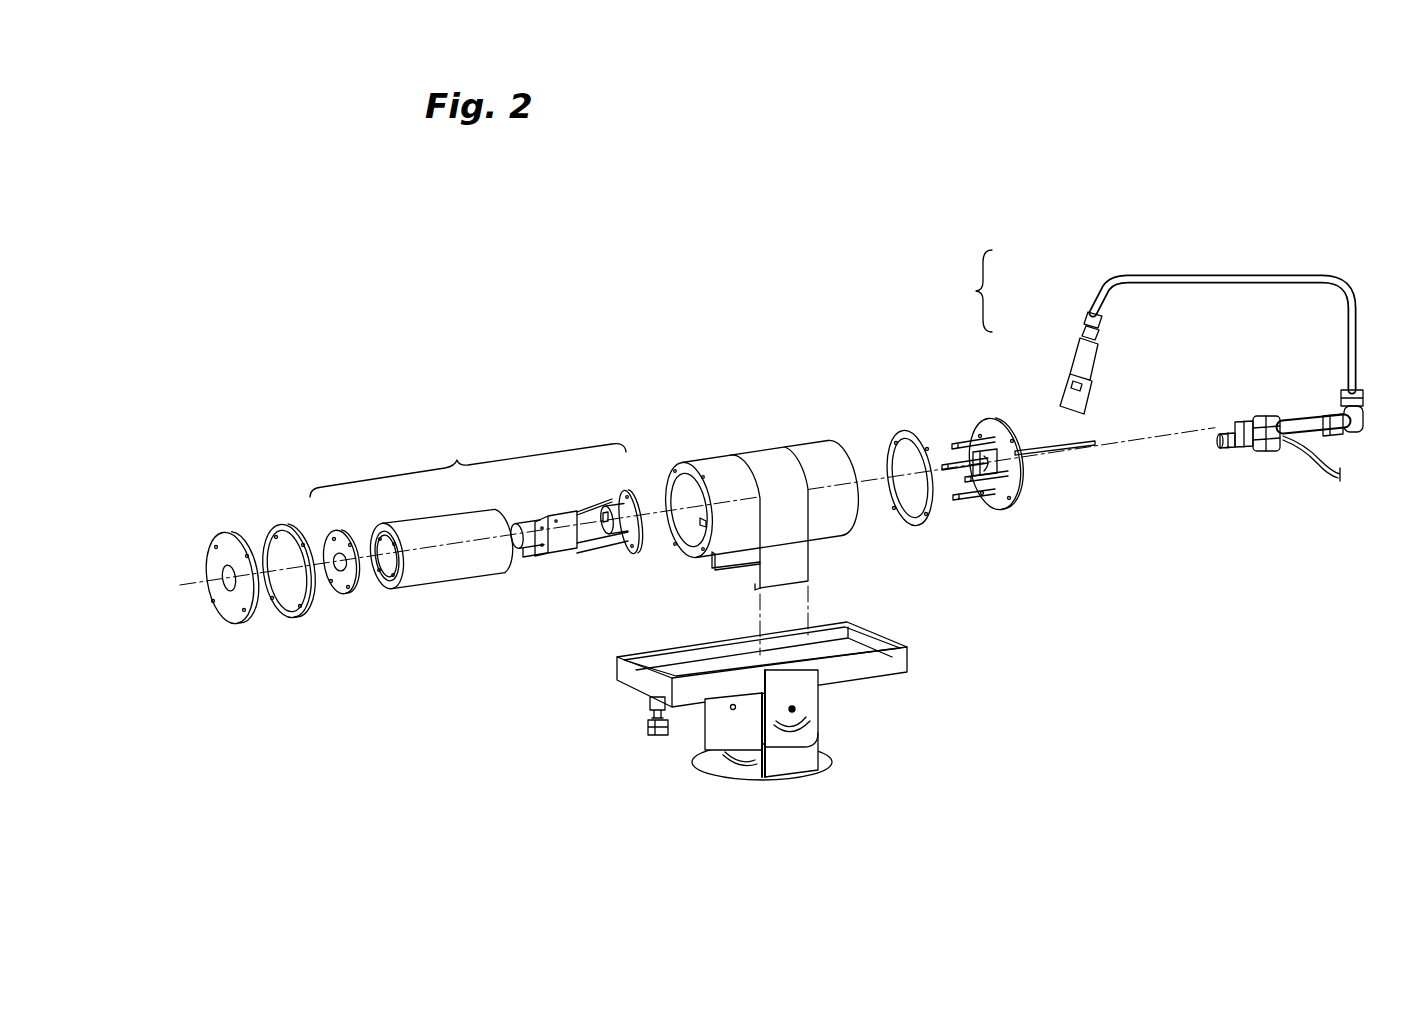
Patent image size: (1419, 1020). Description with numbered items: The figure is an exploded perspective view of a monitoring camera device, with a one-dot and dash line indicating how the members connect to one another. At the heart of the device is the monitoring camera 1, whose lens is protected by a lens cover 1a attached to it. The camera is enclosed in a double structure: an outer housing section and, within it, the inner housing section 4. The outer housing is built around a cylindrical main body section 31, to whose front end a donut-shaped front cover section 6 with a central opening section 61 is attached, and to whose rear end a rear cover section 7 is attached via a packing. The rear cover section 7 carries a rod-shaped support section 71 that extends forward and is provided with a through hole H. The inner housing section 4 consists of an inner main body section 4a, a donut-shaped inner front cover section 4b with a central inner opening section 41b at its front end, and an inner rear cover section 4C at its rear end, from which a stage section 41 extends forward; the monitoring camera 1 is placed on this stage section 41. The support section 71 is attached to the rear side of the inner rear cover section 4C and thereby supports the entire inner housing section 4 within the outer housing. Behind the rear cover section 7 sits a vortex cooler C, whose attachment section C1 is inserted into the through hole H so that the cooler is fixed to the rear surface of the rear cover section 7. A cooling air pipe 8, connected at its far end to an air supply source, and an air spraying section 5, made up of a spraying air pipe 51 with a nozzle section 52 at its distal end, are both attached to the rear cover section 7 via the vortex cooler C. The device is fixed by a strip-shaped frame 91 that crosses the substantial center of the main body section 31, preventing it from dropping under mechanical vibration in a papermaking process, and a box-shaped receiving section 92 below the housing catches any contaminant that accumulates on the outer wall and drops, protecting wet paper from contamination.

The monitoring camera 1 is at (573, 557).
The lens cover 1a is at (524, 552).
The inner housing section 4 is at (468, 467).
The inner main body section 4a is at (422, 588).
The inner front cover section 4b is at (350, 605).
The stage section 41 is at (556, 555).
The inner opening section 41b is at (333, 583).
The inner rear cover section 4C is at (632, 552).
The air spraying section 5 is at (1160, 343).
The spraying air pipe 51 is at (1100, 276).
The nozzle section 52 is at (1068, 378).
The front cover section 6 is at (225, 604).
The opening section 61 is at (228, 600).
The rear cover section 7 is at (1011, 454).
The support section 71 is at (962, 440).
The cooling air pipe 8 is at (1318, 472).
The main body section 31 is at (858, 527).
The frame 91 is at (810, 572).
The receiving section 92 is at (908, 655).
The vortex cooler C is at (1233, 470).
The attachment section C1 is at (1226, 442).
The through hole H is at (1002, 478).